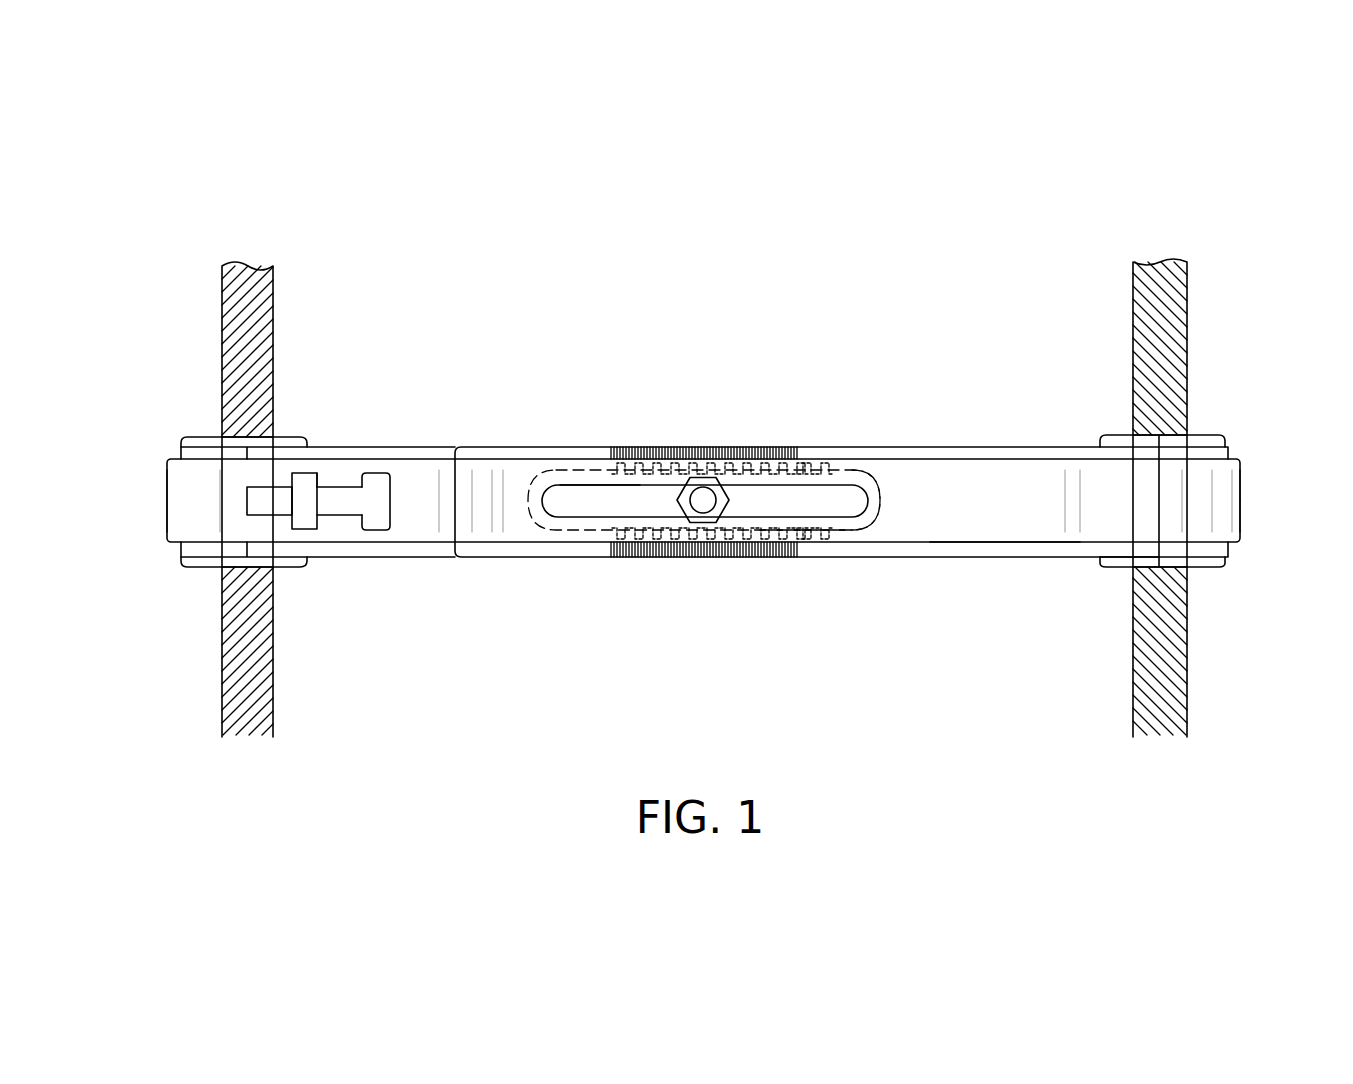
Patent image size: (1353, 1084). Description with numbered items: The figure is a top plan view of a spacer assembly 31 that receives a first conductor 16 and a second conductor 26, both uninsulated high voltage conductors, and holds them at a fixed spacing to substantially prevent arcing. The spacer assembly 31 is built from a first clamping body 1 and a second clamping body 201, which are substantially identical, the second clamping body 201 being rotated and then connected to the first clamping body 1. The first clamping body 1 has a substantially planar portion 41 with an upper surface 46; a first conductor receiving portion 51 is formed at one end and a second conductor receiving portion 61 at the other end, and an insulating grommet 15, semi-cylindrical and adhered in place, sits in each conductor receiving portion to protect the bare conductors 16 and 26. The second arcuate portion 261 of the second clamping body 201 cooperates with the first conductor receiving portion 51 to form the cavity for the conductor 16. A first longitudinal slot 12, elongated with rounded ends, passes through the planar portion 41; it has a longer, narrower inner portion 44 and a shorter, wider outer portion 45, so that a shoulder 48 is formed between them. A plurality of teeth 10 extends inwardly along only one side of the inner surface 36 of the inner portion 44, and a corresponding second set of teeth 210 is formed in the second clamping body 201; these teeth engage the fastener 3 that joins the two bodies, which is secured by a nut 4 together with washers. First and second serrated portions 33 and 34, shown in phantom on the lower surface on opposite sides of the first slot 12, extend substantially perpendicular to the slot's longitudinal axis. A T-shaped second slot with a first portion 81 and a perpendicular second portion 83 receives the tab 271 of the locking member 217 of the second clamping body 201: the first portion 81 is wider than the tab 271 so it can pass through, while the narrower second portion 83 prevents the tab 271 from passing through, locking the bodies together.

The first clamping body 1 is at (950, 482).
The fastener 3 is at (721, 514).
The nut 4 is at (738, 483).
The teeth 10 is at (808, 470).
The first longitudinal slot 12 is at (592, 487).
The insulating grommet 15 is at (190, 437).
The first conductor 16 is at (1187, 290).
The second conductor 26 is at (273, 290).
The spacer assembly 31 is at (848, 288).
The first serrated portion 33 is at (648, 557).
The second serrated portion 34 is at (660, 447).
The inner surface 36 is at (540, 478).
The planar portion 41 is at (905, 447).
The inner portion 44 is at (875, 522).
The outer portion 45 is at (860, 470).
The upper surface 46 is at (1010, 522).
The shoulder 48 is at (568, 485).
The first conductor receiving portion 51 is at (1108, 565).
The second conductor receiving portion 61 is at (162, 500).
The first portion 81 is at (380, 502).
The second portion 83 is at (275, 487).
The second clamping body 201 is at (1246, 522).
The second set of teeth 210 is at (822, 527).
The locking member 217 is at (318, 456).
The second arcuate portion 261 is at (1246, 480).
The tab 271 is at (318, 476).